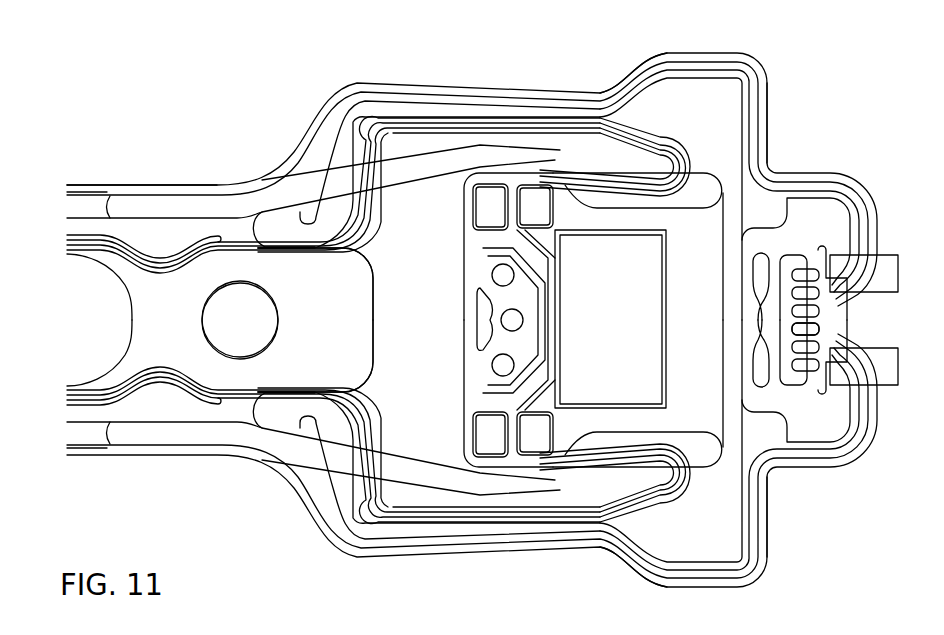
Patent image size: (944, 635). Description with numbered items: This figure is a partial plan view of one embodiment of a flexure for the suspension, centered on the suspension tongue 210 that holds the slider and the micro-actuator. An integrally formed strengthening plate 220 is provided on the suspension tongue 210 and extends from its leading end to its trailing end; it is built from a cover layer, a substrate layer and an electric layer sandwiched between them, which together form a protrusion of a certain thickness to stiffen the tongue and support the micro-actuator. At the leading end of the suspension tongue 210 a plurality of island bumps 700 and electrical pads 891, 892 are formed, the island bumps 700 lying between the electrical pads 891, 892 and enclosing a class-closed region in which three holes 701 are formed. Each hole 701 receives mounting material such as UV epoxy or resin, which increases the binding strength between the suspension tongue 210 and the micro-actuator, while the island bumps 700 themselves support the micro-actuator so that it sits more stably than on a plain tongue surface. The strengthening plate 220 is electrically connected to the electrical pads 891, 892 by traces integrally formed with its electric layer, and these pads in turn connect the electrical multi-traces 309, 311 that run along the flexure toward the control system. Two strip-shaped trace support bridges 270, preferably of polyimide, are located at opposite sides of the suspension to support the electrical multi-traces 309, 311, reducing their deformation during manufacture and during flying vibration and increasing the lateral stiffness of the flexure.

The suspension tongue 210 is at (412, 243).
The strengthening plate 220 is at (625, 287).
The trace support bridges 270 is at (592, 120).
The electrical multi-traces 309 is at (748, 103).
The electrical multi-traces 311 is at (180, 248).
The island bumps 700 is at (485, 323).
The hole 701 is at (502, 367).
The electrical pads 891 is at (530, 435).
The electrical pads 892 is at (539, 210).